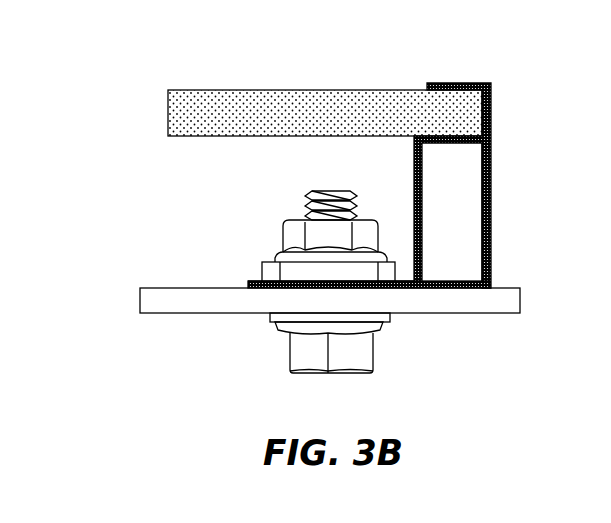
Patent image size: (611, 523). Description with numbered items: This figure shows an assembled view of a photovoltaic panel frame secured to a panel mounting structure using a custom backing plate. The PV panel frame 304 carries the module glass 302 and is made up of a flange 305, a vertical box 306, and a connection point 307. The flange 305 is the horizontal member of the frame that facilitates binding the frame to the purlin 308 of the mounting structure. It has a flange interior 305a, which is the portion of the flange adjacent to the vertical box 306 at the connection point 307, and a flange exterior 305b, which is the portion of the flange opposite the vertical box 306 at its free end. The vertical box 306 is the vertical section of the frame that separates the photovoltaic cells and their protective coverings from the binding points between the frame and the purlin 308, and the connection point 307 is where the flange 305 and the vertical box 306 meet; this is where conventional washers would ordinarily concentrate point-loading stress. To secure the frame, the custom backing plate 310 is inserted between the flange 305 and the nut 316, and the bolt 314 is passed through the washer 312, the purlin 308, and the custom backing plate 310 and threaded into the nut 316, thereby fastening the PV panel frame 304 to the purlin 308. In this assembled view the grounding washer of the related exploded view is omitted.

The module glass 302 is at (304, 90).
The PV panel frame 304 is at (510, 168).
The flange 305 is at (255, 281).
The flange interior 305a is at (388, 292).
The flange exterior 305b is at (257, 291).
The vertical box 306 is at (492, 213).
The connection point 307 is at (492, 286).
The purlin 308 is at (140, 298).
The custom backing plate 310 is at (263, 265).
The washer 312 is at (270, 316).
The bolt 314 is at (290, 360).
The nut 316 is at (295, 220).